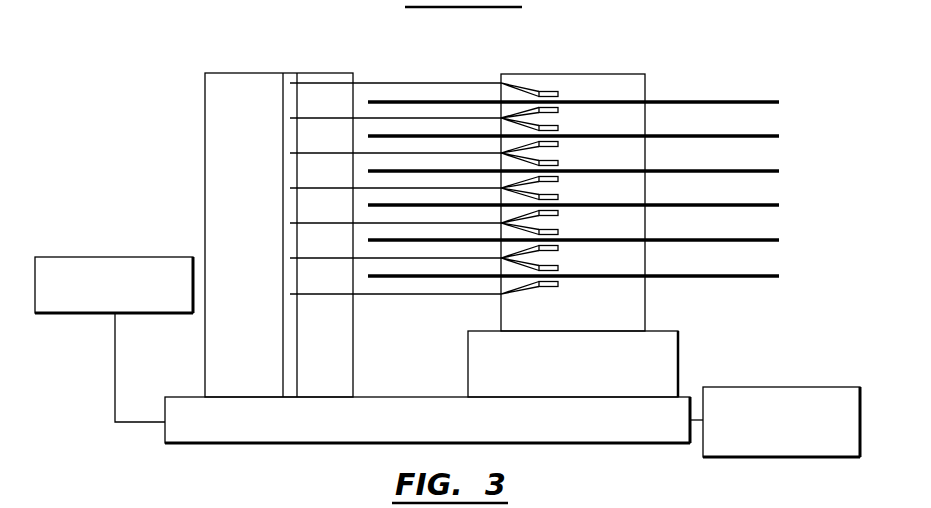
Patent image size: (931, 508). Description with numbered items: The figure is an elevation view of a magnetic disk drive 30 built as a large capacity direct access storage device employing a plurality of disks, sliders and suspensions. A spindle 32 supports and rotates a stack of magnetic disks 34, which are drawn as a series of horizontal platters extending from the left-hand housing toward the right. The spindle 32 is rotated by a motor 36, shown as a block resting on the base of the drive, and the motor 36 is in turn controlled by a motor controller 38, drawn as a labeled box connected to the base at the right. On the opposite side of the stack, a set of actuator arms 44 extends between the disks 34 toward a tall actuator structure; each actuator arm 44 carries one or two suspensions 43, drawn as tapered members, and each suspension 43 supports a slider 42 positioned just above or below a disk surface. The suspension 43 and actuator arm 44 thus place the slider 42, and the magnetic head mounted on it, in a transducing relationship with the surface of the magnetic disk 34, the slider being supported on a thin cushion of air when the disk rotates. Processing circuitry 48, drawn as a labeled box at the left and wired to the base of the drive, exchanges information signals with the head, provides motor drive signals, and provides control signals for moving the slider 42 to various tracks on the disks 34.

The magnetic disk drive 30 is at (737, 61).
The spindle 32 is at (622, 74).
The magnetic disk 34 is at (755, 104).
The motor 36 is at (587, 377).
The motor controller 38 is at (785, 387).
The slider 42 is at (543, 108).
The suspension 43 is at (524, 118).
The actuator arm 44 is at (448, 118).
The processing circuitry 48 is at (95, 257).